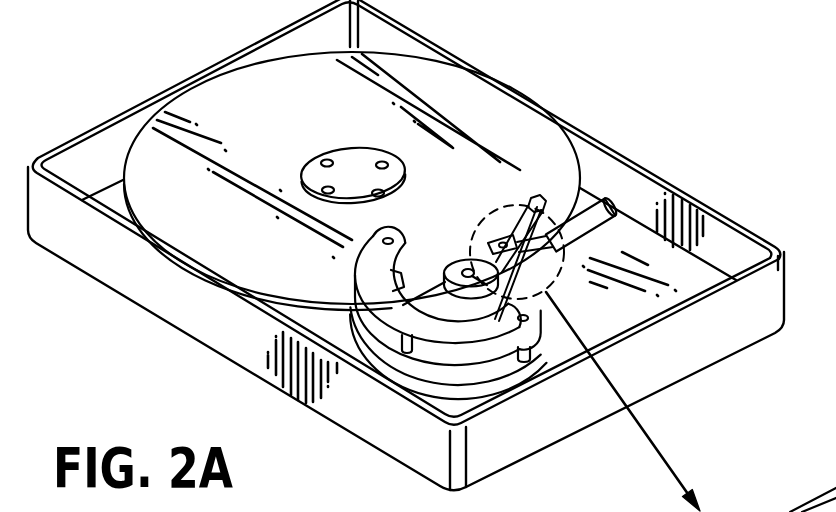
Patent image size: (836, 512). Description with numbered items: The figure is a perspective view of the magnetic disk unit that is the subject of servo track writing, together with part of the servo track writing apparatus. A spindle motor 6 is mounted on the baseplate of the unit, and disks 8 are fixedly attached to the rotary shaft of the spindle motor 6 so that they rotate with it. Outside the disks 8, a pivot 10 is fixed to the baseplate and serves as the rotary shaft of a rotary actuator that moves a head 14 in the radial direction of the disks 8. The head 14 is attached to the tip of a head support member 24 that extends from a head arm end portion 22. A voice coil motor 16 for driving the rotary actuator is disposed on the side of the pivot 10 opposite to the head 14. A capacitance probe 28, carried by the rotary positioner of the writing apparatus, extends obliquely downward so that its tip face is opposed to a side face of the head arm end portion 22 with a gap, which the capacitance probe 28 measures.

The spindle motor 6 is at (347, 163).
The disks 8 is at (462, 100).
The pivot 10 is at (452, 268).
The head 14 is at (536, 196).
The voice coil motor 16 is at (438, 332).
The head arm end portion 22 is at (470, 258).
The head support member 24 is at (515, 225).
The capacitance probe 28 is at (590, 200).